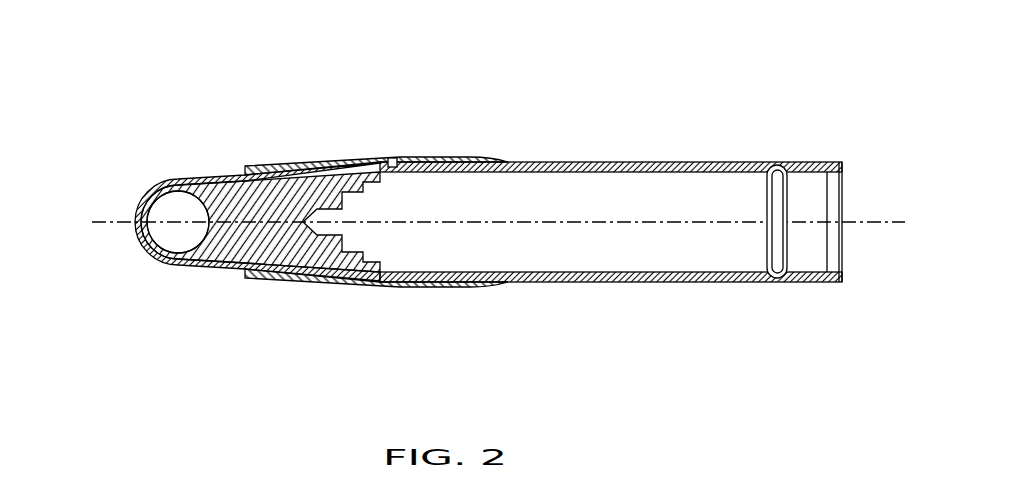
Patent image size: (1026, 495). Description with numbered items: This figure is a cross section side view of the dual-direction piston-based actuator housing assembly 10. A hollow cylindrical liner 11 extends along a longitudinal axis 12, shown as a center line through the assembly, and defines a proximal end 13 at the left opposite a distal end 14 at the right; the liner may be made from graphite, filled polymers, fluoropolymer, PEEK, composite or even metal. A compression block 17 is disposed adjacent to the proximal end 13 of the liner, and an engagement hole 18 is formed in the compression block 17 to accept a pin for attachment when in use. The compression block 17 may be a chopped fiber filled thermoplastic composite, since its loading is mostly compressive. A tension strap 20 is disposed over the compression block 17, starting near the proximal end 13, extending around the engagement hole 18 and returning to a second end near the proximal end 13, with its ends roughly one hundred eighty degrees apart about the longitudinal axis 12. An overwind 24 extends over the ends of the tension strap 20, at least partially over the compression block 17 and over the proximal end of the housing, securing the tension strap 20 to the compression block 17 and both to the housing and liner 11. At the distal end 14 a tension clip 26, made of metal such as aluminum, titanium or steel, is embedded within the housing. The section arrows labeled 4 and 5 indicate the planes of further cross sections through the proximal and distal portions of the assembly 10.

The dual-direction piston-based actuator housing assembly 10 is at (486, 186).
The section line 4 is at (430, 323).
The section line 5 is at (730, 327).
The tension strap 20 is at (238, 172).
The compression block 17 is at (228, 250).
The engagement hole 18 is at (172, 209).
The hollow cylindrical liner 11 is at (611, 242).
The proximal end 13 is at (443, 172).
The distal end 14 is at (826, 172).
The tension clip 26 is at (778, 178).
The longitudinal axis 12 is at (878, 226).
The overwind 24 is at (372, 160).